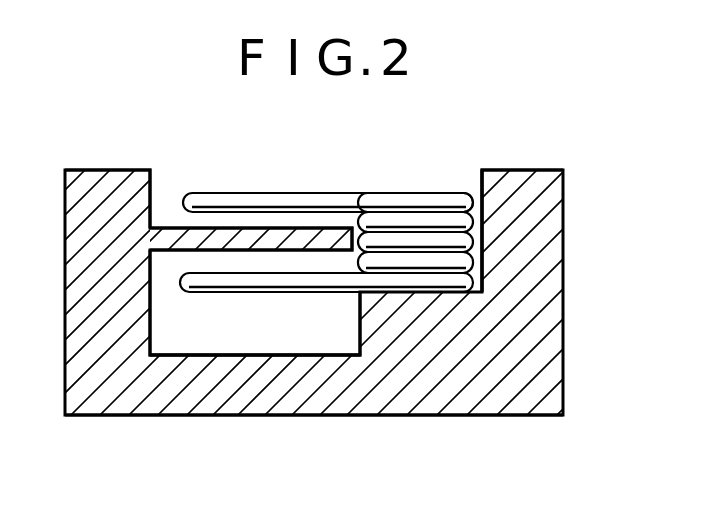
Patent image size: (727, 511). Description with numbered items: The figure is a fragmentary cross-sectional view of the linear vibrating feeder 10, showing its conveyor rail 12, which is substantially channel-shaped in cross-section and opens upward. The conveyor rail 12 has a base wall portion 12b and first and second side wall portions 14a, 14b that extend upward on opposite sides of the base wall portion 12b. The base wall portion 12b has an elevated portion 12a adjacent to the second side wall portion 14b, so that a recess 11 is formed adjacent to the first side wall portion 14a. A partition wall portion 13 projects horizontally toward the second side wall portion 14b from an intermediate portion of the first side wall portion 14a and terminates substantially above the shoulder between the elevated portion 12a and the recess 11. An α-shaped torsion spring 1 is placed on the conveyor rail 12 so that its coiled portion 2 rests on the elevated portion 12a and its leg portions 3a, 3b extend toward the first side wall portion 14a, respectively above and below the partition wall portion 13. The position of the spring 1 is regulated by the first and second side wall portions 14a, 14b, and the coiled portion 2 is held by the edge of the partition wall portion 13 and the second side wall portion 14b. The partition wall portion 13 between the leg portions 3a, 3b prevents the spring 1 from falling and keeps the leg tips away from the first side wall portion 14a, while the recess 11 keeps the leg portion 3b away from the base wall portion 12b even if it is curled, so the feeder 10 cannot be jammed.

The α-shaped torsion spring 1 is at (378, 182).
The coiled portion 2 is at (448, 202).
The leg portion 3a is at (245, 192).
The leg portion 3b is at (203, 292).
The linear vibrating feeder 10 is at (329, 429).
The recess 11 is at (232, 343).
The conveyor rail 12 is at (530, 332).
The elevated portion 12a is at (485, 290).
The base wall portion 12b is at (286, 383).
The partition wall portion 13 is at (173, 235).
The first side wall portion 14a is at (108, 170).
The second side wall portion 14b is at (563, 170).